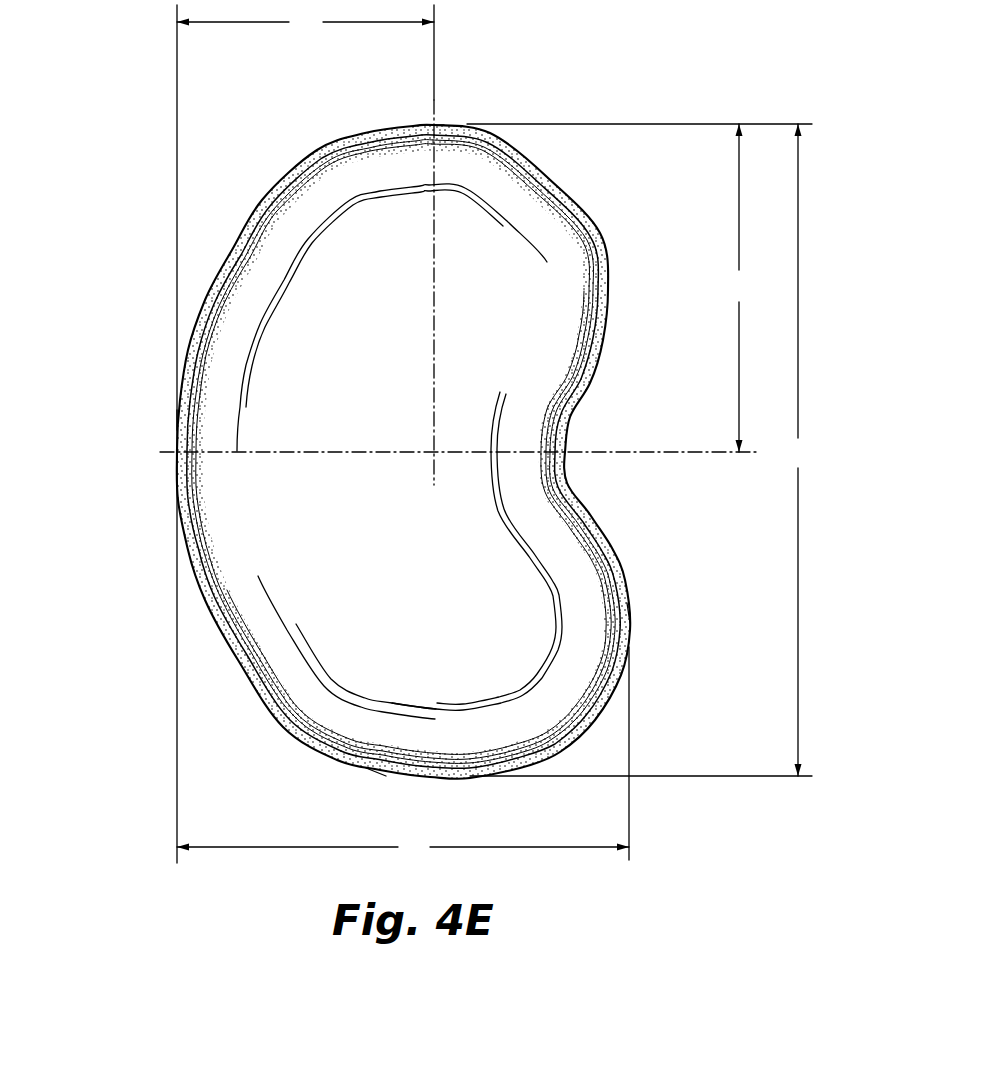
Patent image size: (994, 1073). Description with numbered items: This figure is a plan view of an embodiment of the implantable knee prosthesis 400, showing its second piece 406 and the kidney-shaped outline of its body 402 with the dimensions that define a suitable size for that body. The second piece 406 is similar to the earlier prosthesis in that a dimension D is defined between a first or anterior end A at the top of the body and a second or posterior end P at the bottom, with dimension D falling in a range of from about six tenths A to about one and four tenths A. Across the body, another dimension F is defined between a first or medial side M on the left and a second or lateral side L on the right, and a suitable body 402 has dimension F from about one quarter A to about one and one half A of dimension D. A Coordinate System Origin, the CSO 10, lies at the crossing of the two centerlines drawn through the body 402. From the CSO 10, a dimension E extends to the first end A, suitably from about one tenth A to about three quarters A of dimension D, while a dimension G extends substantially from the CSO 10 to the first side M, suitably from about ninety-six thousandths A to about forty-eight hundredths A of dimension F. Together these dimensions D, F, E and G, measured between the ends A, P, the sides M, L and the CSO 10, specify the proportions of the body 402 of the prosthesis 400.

The prosthesis 400 is at (117, 222).
The body 402 is at (305, 168).
The second piece 406 is at (568, 163).
The Coordinate System Origin (CSO) 10 is at (434, 452).
The first or anterior end A is at (423, 122).
The first or medial side M is at (177, 420).
The second or lateral side L is at (628, 613).
The second or posterior end P is at (375, 772).
The dimension G is at (305, 22).
The dimension F is at (403, 848).
The dimension E is at (737, 288).
The dimension D is at (797, 450).